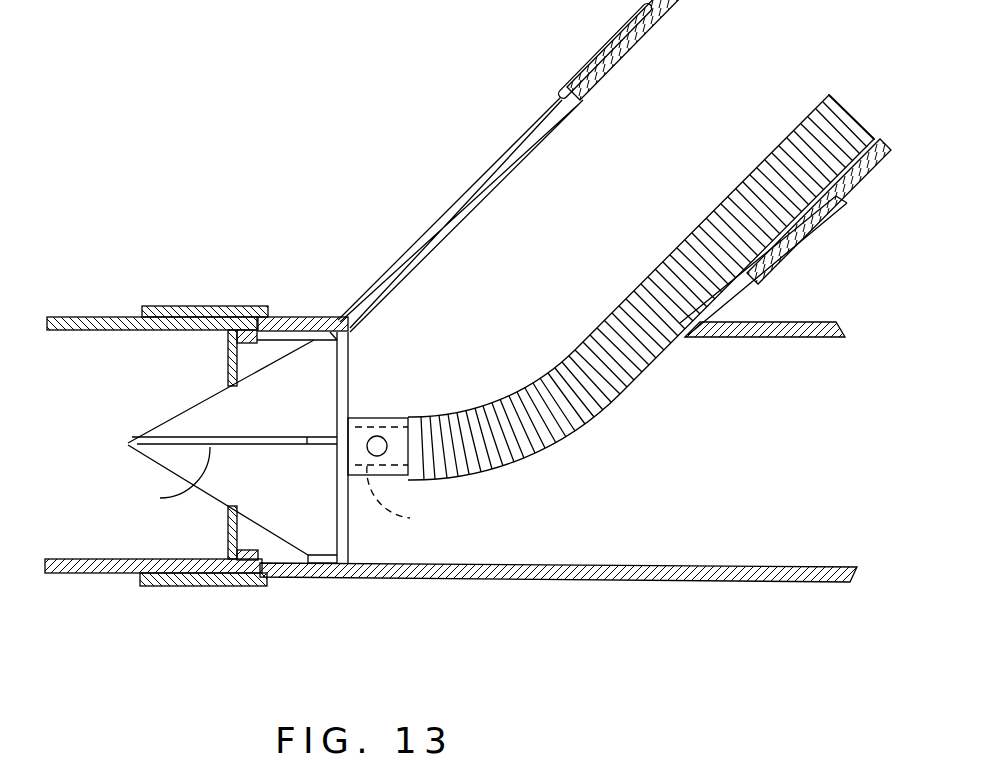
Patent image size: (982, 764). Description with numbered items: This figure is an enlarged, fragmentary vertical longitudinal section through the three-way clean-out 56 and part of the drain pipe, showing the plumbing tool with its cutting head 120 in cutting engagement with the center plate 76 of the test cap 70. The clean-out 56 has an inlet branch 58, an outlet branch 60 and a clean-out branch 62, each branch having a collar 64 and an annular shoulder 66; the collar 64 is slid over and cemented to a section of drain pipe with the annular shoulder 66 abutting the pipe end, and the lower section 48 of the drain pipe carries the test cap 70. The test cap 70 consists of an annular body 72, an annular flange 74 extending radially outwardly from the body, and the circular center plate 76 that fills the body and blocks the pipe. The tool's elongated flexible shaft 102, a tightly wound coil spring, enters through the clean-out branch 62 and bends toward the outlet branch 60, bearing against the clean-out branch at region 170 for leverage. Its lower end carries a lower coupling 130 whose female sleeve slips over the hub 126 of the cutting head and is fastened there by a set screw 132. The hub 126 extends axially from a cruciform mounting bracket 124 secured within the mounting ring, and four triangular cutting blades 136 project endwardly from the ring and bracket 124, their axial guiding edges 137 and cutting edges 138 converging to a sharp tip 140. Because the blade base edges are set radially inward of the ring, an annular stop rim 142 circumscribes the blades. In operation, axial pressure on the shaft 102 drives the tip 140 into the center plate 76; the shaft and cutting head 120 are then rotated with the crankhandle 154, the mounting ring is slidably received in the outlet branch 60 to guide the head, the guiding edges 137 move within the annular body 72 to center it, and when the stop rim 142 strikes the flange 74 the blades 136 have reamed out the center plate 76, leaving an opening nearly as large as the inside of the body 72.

The lower section of the drain pipe 48 is at (103, 317).
The annular body 72 is at (218, 306).
The annular flange 74 is at (247, 318).
The test cap 70 is at (223, 348).
The outlet branch 60 is at (310, 317).
The clean-out branch 62 is at (503, 153).
The axial guiding edges 137 is at (330, 337).
The cutting head 120 is at (145, 423).
The triangular cutting blades 136 is at (245, 423).
The tip 140 is at (128, 445).
The cutting edges 138 is at (157, 462).
The center plate 76 is at (227, 557).
The annular shoulder 66 is at (233, 587).
The collar 64 is at (185, 587).
The three-way clean-out 56 is at (640, 585).
The inlet branch 58 is at (733, 582).
The cruciform mounting bracket 124 is at (343, 555).
The annular stop rim 142 is at (323, 567).
The lower coupling 130 is at (367, 418).
The set screw 132 is at (380, 453).
The hub 126 is at (417, 502).
The flexible shaft 102 is at (593, 421).
The region 170 is at (733, 310).
The crankhandle 154 is at (778, 763).